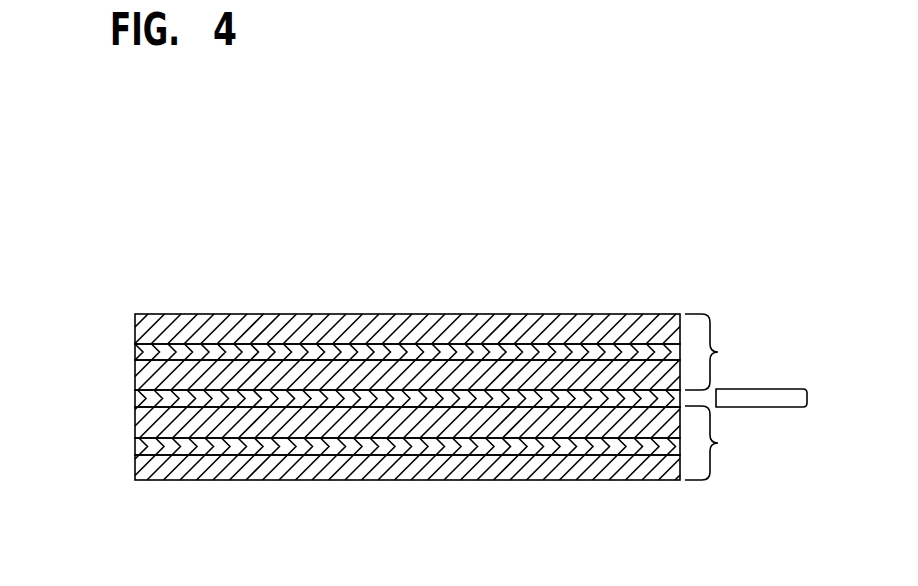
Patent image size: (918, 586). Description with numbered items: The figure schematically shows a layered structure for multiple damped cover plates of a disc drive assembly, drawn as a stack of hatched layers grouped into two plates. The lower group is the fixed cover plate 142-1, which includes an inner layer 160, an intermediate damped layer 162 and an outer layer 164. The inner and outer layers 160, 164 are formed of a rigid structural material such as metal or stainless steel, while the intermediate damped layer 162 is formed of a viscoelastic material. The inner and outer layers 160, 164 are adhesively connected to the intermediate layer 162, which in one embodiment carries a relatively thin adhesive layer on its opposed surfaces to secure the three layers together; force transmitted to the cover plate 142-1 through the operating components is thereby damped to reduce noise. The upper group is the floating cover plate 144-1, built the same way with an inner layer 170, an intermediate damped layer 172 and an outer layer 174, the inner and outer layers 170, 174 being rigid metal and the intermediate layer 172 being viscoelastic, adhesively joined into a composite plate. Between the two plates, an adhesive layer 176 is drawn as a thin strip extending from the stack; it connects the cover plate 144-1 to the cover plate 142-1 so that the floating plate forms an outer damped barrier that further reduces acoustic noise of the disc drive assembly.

The outer layer 174 is at (135, 322).
The intermediate damped layer 172 is at (135, 350).
The inner layer 170 is at (135, 375).
The outer layer 164 is at (135, 428).
The intermediate damped layer 162 is at (135, 448).
The inner layer 160 is at (135, 475).
The floating cover plate 144-1 is at (718, 352).
The fixed cover plate 142-1 is at (718, 443).
The adhesive layer 176 is at (807, 398).